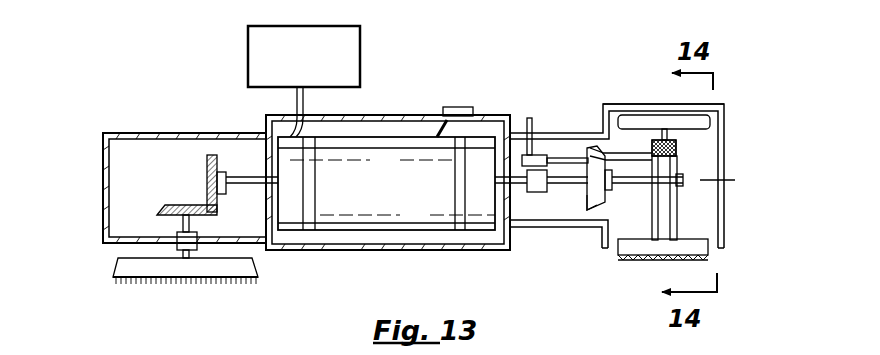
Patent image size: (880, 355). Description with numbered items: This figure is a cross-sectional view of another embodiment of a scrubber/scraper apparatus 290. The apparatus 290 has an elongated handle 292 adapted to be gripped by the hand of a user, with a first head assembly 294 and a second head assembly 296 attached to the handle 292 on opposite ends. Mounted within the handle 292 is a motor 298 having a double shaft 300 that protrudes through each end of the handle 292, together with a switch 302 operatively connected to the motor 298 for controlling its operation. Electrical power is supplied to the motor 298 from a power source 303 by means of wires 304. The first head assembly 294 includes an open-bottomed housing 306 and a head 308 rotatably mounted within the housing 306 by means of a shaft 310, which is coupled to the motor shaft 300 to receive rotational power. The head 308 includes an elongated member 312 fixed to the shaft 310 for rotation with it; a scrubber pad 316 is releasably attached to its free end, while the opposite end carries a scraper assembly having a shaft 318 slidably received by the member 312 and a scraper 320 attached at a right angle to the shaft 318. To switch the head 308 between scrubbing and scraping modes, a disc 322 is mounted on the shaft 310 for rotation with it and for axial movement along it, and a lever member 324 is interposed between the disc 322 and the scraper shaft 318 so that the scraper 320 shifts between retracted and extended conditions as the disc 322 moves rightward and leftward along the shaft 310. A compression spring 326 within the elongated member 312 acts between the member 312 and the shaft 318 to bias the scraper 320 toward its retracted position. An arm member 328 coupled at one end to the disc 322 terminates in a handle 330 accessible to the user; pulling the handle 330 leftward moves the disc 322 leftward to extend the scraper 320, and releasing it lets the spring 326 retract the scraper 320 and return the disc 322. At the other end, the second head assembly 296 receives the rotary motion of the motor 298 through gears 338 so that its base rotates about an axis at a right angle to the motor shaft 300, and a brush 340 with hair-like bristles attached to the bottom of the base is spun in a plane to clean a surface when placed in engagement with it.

The scrubber/scraper apparatus 290 is at (737, 88).
The elongated handle 292 is at (414, 115).
The first head assembly 294 is at (726, 217).
The second head assembly 296 is at (103, 187).
The motor 298 is at (352, 232).
The double shaft 300 is at (522, 193).
The switch 302 is at (464, 106).
The power source 303 is at (362, 44).
The wires 304 is at (305, 95).
The open-bottomed housing 306 is at (725, 141).
The head 308 is at (699, 153).
The shaft 310 is at (626, 184).
The elongated member 312 is at (680, 222).
The scrubber pad 316 is at (622, 259).
The shaft 318 is at (668, 133).
The scraper 320 is at (637, 115).
The disc 322 is at (597, 204).
The lever member 324 is at (597, 147).
The compression spring 326 is at (678, 158).
The arm member 328 is at (558, 158).
The handle 330 is at (530, 118).
The gears 338 is at (205, 177).
The brush 340 is at (190, 284).